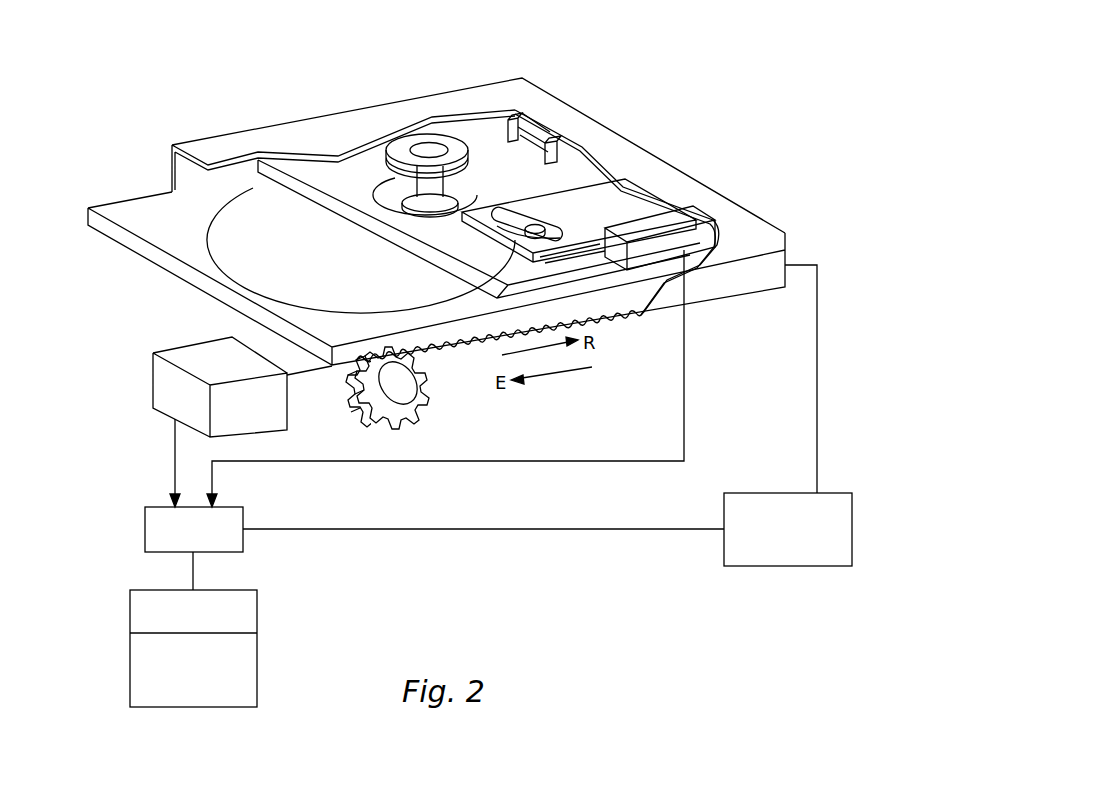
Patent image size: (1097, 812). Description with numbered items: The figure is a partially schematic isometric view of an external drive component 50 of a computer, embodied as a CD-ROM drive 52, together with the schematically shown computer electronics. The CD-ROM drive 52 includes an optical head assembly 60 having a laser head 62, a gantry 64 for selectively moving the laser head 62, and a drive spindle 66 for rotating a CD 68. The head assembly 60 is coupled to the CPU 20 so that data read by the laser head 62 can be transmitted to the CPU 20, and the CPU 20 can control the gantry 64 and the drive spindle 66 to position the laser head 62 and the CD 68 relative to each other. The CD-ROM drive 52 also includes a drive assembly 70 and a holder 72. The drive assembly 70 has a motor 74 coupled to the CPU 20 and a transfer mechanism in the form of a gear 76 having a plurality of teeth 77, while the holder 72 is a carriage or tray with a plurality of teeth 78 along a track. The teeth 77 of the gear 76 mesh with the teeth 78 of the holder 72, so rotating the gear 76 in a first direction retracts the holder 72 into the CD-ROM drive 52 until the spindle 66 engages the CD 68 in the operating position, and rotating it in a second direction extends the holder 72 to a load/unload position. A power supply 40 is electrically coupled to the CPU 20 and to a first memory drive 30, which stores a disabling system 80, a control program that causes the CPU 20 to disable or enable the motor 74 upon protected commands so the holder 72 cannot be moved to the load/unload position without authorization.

The central processing unit 20 is at (143, 528).
The first memory drive 30 is at (130, 605).
The power supply 40 is at (770, 492).
The external drive component 50 is at (472, 49).
The CD-ROM drive 52 is at (413, 97).
The optical head assembly 60 is at (600, 203).
The laser head 62 is at (550, 255).
The gantry 64 is at (567, 148).
The drive spindle 66 is at (388, 153).
The CD 68 is at (299, 222).
The drive assembly 70 is at (116, 391).
The holder 72 is at (163, 265).
The motor 74 is at (288, 405).
The gear 76 is at (407, 377).
The teeth 77 is at (388, 410).
The teeth 78 is at (462, 342).
The disabling system 80 is at (130, 672).